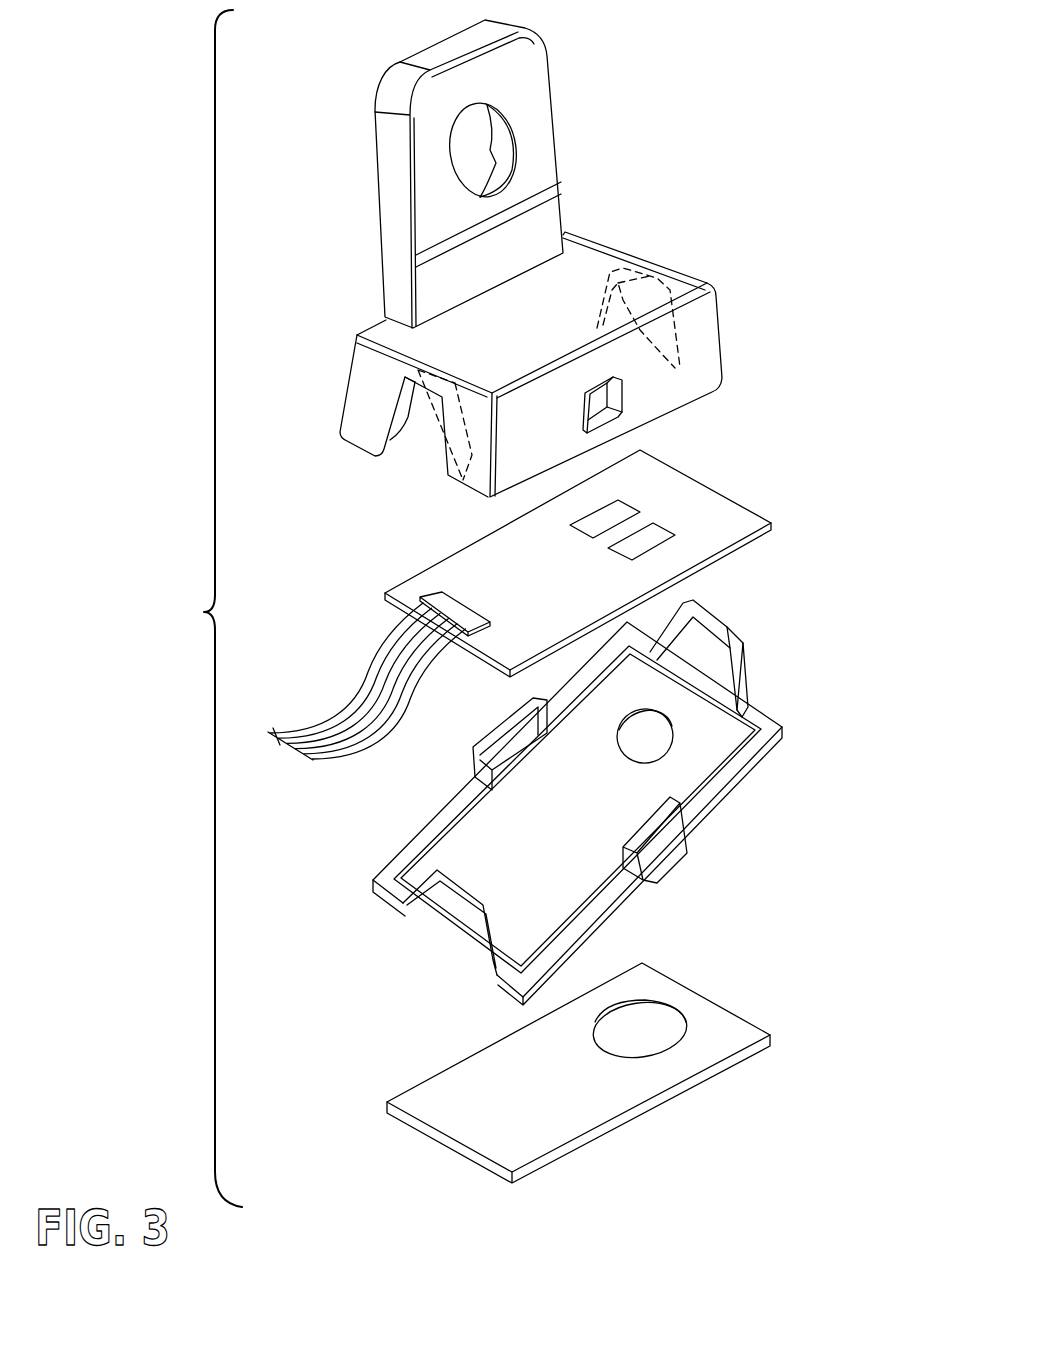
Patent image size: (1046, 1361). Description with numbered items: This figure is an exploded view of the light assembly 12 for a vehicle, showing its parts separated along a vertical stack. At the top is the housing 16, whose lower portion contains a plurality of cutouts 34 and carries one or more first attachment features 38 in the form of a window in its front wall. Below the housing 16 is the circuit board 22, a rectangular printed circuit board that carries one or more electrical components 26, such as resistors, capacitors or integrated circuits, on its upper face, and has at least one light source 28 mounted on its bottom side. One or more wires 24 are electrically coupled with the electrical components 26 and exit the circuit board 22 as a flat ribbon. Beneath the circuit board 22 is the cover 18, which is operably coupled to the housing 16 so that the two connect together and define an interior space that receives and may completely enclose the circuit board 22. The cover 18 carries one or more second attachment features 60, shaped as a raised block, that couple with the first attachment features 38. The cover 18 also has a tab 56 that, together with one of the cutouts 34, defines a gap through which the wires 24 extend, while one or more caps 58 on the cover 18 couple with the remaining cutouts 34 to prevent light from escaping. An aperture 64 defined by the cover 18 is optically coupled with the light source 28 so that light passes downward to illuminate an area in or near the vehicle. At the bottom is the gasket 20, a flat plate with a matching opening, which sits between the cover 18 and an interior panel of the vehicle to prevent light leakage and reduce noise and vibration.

The light assembly 12 is at (203, 612).
The housing 16 is at (653, 218).
The cover 18 is at (776, 773).
The gasket 20 is at (710, 997).
The circuit board 22 is at (748, 508).
The wires 24 is at (332, 718).
The electrical components 26 is at (667, 527).
The light source 28 is at (668, 593).
The cutouts 34 is at (685, 287).
The first attachment features 38 is at (627, 400).
The tab 56 is at (452, 890).
The caps 58 is at (737, 630).
The second attachment features 60 is at (672, 857).
The aperture 64 is at (672, 722).